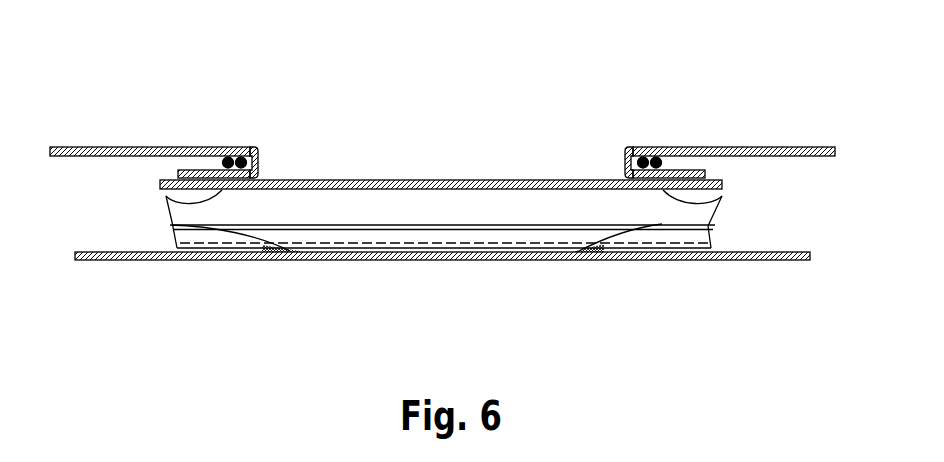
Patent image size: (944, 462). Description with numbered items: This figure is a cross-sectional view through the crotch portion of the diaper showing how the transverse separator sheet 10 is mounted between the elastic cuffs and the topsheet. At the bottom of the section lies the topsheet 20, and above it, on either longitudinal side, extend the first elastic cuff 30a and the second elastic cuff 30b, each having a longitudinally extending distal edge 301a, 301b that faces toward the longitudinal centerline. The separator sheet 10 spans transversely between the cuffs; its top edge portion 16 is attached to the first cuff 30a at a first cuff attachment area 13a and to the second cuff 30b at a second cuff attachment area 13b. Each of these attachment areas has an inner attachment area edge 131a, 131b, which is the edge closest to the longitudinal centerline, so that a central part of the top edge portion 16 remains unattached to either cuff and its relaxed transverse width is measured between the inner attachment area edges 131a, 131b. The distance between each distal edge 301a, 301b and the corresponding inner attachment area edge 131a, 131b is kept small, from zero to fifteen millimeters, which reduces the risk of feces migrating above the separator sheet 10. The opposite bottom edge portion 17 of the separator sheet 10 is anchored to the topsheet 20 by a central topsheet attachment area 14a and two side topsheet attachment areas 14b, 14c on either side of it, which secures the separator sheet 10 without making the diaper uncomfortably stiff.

The transverse separator sheet 10 is at (444, 207).
The first cuff attachment area 13a is at (167, 196).
The second cuff attachment area 13b is at (721, 197).
The central topsheet attachment area 14a is at (452, 246).
The side topsheet attachment area 14b is at (173, 226).
The side topsheet attachment area 14c is at (711, 228).
The top edge portion 16 is at (491, 180).
The bottom edge portion 17 is at (545, 262).
The topsheet 20 is at (113, 262).
The first elastic cuff 30a is at (98, 146).
The second elastic cuff 30b is at (803, 147).
The inner attachment area edge of the first cuff attachment area 131a is at (259, 177).
The inner attachment area edge of the second cuff attachment area 131b is at (630, 177).
The distal edge of the first elastic cuff 301a is at (258, 171).
The distal edge of the second elastic cuff 301b is at (626, 162).